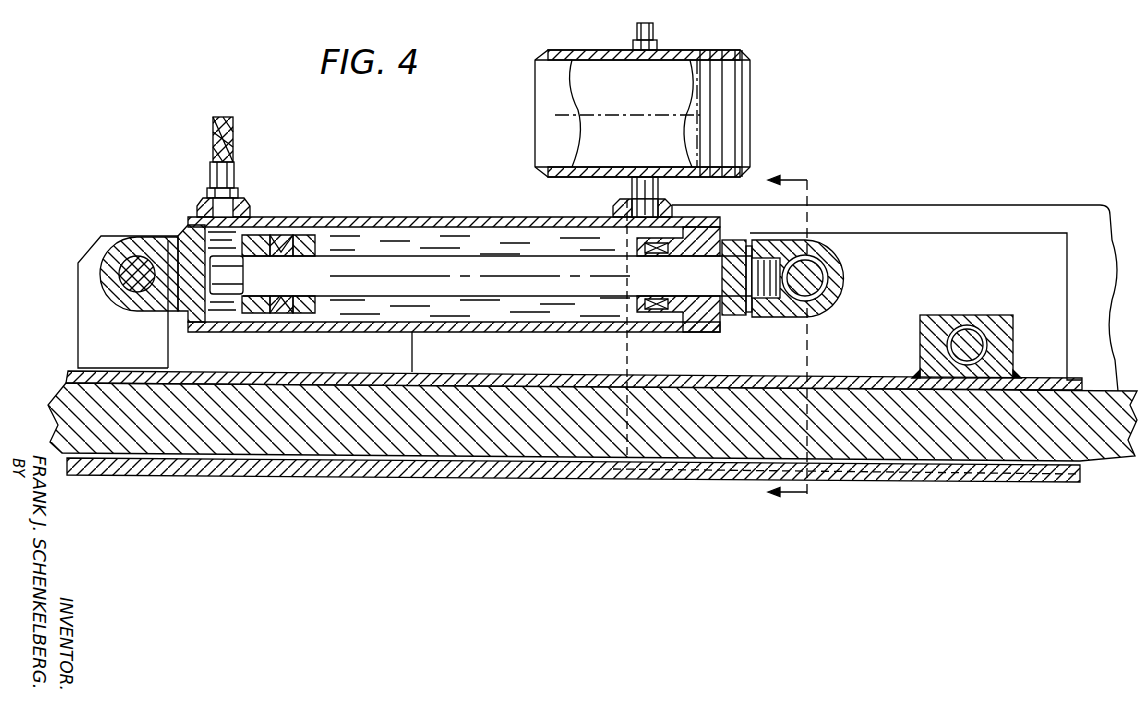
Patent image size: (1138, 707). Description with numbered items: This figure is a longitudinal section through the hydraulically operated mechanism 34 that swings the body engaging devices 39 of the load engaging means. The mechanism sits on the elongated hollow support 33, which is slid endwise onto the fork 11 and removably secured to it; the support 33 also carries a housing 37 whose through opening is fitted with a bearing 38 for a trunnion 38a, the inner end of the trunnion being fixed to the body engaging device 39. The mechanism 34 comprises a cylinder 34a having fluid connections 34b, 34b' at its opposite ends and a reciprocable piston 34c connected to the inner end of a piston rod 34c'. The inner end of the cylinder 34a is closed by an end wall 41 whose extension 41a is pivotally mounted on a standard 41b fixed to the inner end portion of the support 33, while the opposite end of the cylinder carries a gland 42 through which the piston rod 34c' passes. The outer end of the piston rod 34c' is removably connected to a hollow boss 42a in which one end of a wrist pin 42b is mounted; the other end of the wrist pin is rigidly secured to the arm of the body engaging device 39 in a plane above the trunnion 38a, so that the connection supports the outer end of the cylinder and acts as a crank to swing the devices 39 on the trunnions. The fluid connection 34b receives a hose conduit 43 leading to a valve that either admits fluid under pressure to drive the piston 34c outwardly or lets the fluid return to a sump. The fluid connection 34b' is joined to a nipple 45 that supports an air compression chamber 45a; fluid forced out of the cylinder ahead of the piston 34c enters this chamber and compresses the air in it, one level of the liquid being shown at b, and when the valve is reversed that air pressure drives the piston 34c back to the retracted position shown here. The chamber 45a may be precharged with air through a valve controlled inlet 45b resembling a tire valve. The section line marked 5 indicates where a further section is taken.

The fork 11 is at (472, 448).
The support 33 is at (608, 472).
The hydraulically operated mechanism 34 is at (487, 366).
The cylinder 34a is at (327, 330).
The fluid connection 34b is at (248, 186).
The fluid connection 34b' is at (672, 196).
The piston 34c is at (304, 248).
The piston rod 34c' is at (480, 247).
The housing 37 is at (1003, 356).
The bearing 38 is at (927, 357).
The trunnion 38a is at (968, 340).
The body engaging device 39 is at (957, 252).
The end wall 41 is at (183, 326).
The extension 41a is at (135, 313).
The standard 41b is at (88, 317).
The gland 42 is at (720, 330).
The hollow boss 42a is at (762, 318).
The wrist pin 42b is at (823, 277).
The fluid conduit 43 is at (234, 128).
The nipple 45 is at (632, 189).
The air compression chamber 45a is at (733, 107).
The valve controlled inlet 45b is at (657, 31).
The section line 5- 5 is at (783, 338).
The liquid level b is at (642, 116).